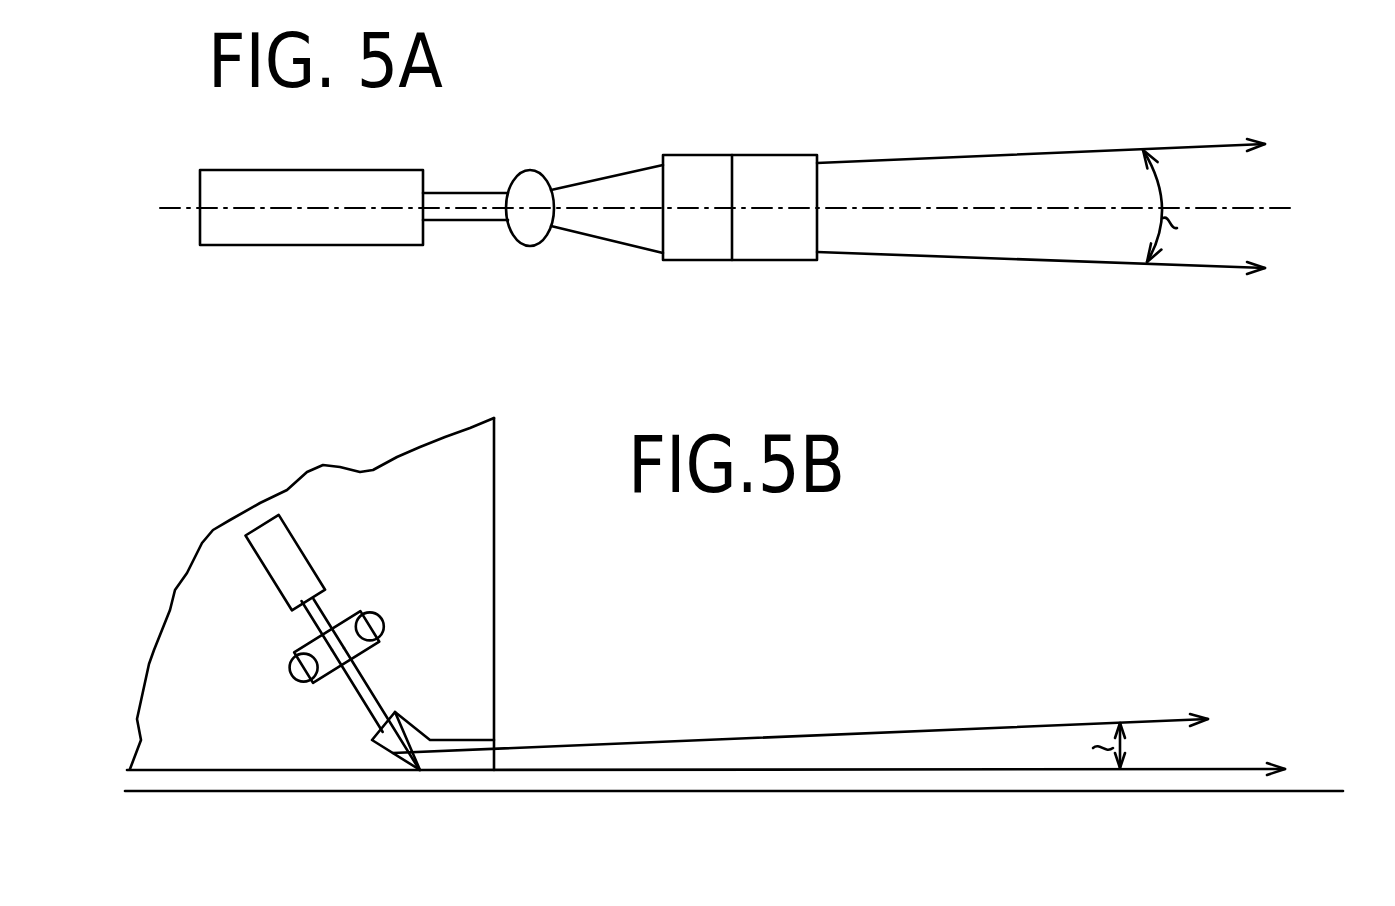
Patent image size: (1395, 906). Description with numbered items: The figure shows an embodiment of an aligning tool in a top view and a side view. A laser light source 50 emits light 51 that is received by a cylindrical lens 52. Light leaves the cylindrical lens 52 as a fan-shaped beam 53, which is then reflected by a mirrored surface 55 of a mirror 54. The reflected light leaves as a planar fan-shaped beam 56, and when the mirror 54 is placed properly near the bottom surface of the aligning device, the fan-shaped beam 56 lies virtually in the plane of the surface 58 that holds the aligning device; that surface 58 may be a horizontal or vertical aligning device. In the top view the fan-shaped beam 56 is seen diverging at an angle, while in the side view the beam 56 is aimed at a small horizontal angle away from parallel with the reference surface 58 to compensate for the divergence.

In FIG. 5A, the laser light source 50 is at (383, 247).
In FIG. 5B, the laser light source 50 is at (303, 545).
In FIG. 5A, the light 51 is at (473, 192).
In FIG. 5B, the light 51 is at (325, 610).
In FIG. 5A, the cylindrical lens 52 is at (550, 175).
In FIG. 5B, the cylindrical lens 52 is at (380, 612).
In FIG. 5A, the fan-shaped beam 53 is at (633, 167).
In FIG. 5B, the fan-shaped beam 53 is at (371, 680).
In FIG. 5A, the mirror 54 is at (687, 262).
In FIG. 5B, the mirror 54 is at (444, 703).
In FIG. 5B, the mirrored surface 55 is at (385, 755).
In FIG. 5A, the fan-shaped beam 56 is at (1202, 145).
In FIG. 5B, the fan-shaped beam 56 is at (972, 742).
In FIG. 5B, the surface 58 is at (1308, 790).